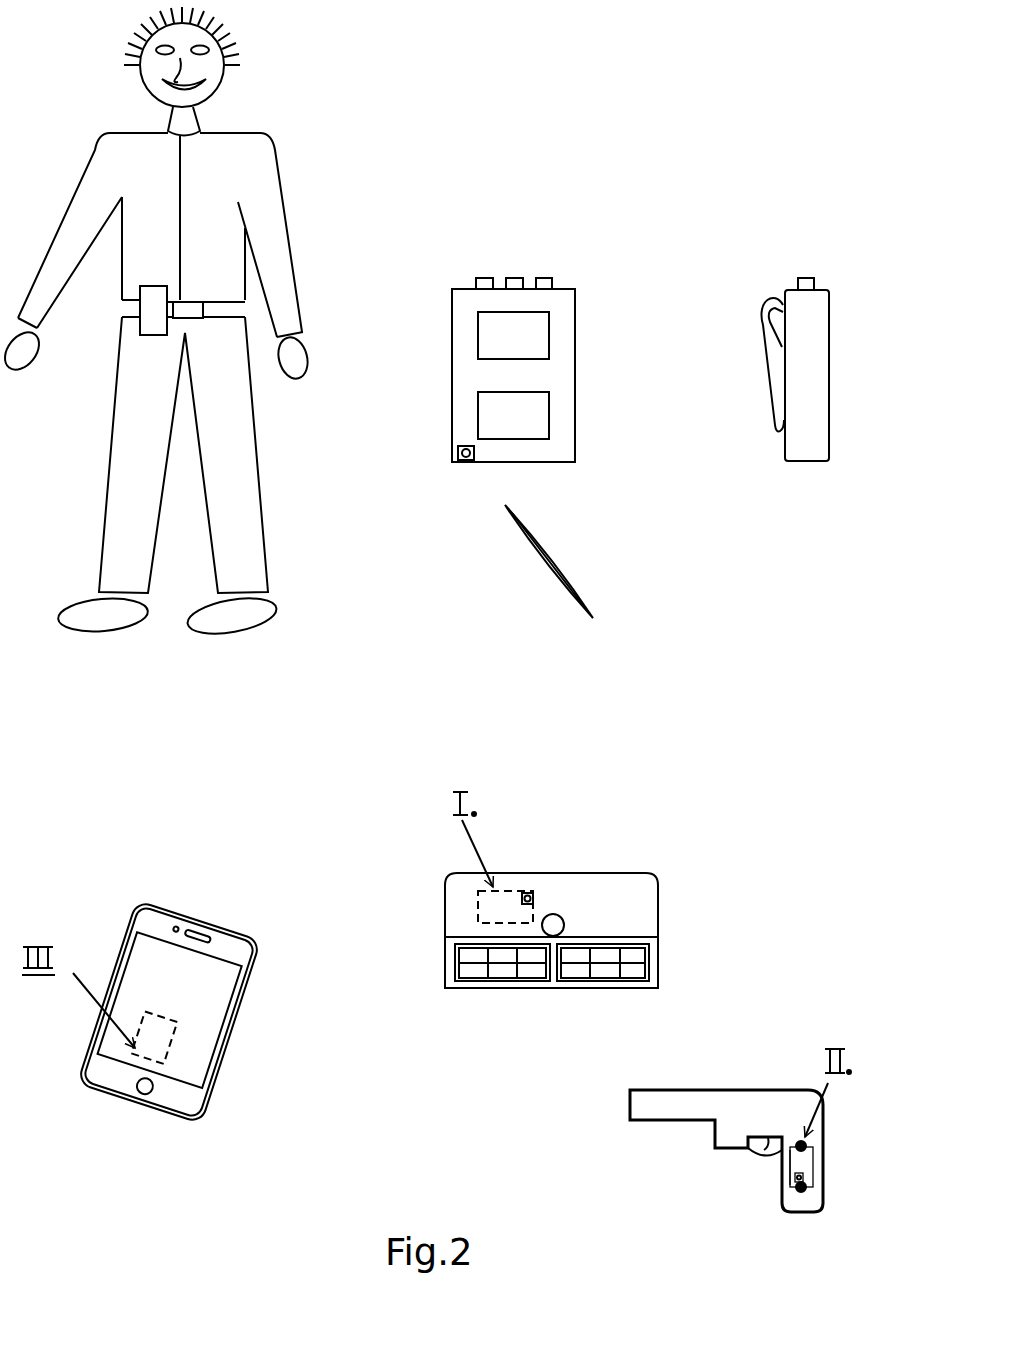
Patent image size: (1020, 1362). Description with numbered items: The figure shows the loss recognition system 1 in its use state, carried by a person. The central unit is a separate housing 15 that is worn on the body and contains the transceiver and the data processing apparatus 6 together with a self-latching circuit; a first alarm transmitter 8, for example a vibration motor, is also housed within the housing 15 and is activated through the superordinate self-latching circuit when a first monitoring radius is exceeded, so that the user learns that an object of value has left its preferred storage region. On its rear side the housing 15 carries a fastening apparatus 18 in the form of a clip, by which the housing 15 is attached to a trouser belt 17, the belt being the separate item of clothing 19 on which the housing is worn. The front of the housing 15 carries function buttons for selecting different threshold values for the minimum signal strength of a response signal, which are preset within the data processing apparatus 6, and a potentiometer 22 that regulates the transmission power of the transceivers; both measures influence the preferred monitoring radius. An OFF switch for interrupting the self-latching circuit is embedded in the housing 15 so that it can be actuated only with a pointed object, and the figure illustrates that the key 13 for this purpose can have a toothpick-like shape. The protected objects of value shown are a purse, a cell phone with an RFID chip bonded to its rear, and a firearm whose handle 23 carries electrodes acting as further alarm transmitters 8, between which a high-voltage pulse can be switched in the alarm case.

The loss recognition system 1 is at (718, 709).
The data processing apparatus 6 is at (527, 335).
The alarm transmitter 8 is at (806, 1185).
The key 13 is at (543, 553).
The housing 15 is at (536, 380).
The trouser belt 17 is at (245, 378).
The fastening apparatus 18 is at (780, 407).
The item of clothing 19 is at (222, 313).
The potentiometer 22 is at (552, 278).
The handle 23 is at (802, 1203).